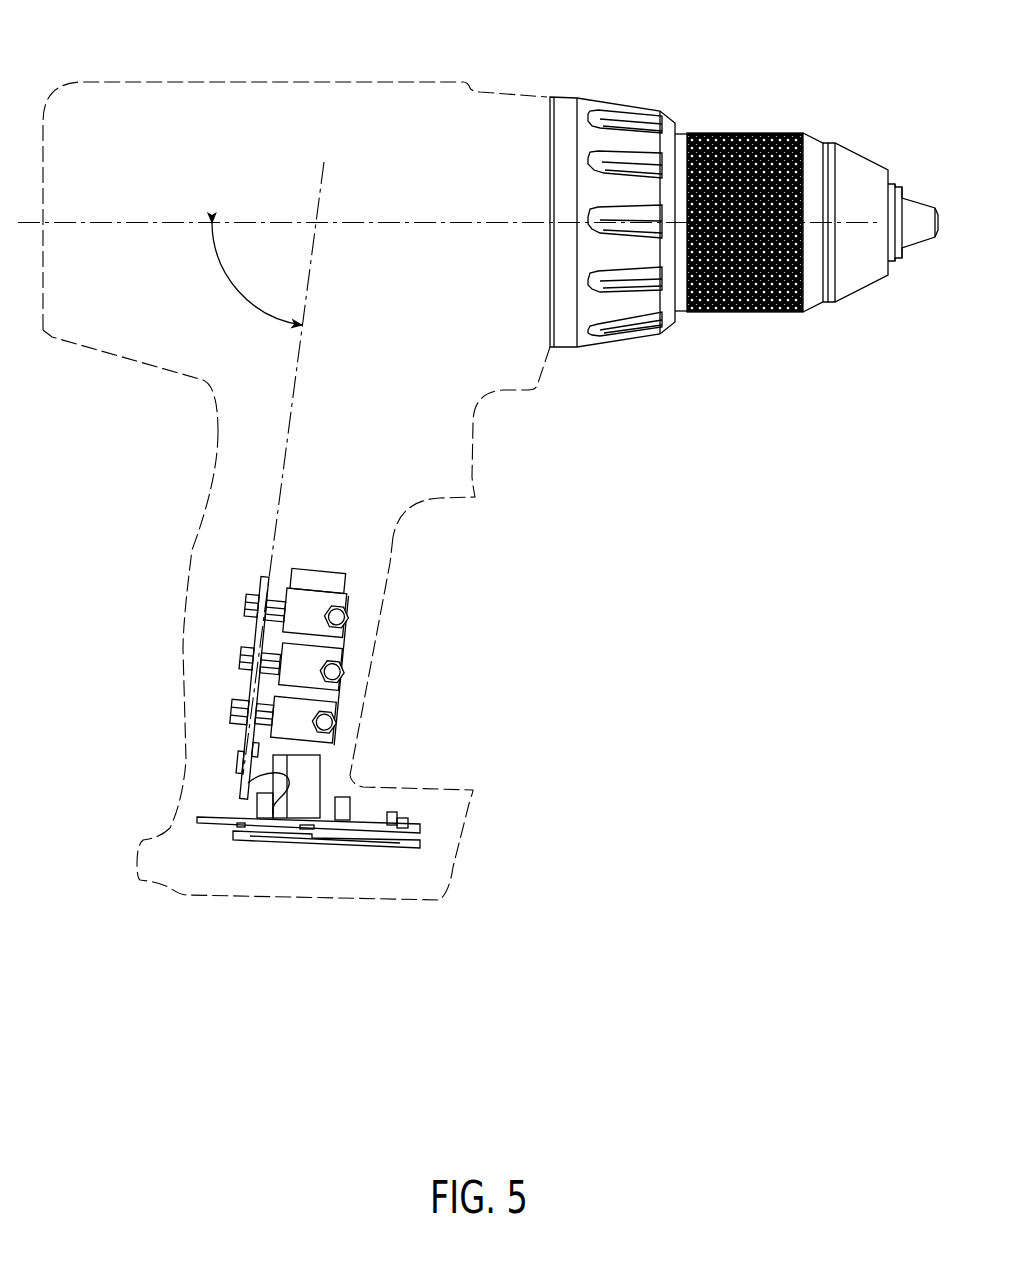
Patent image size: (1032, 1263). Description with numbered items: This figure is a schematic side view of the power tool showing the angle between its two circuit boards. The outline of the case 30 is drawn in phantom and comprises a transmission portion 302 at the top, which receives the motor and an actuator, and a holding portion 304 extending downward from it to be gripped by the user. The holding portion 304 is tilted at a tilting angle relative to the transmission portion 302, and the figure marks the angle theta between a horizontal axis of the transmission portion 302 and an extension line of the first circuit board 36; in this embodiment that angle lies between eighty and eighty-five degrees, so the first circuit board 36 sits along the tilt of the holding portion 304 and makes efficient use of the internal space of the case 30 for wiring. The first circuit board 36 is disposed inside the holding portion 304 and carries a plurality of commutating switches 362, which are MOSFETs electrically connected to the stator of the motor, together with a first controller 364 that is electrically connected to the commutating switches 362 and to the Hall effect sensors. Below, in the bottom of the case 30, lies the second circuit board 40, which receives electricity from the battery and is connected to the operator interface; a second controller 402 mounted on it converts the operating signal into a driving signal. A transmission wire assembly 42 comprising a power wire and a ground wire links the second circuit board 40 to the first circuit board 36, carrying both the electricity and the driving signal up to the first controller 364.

The case 30 is at (163, 372).
The transmission portion 302 is at (308, 82).
The holding portion 304 is at (382, 630).
The first circuit board 36 is at (263, 683).
The commutating switches 362 is at (315, 603).
The first controller 364 is at (258, 762).
The transmission wire assembly 42 is at (242, 783).
The second circuit board 40 is at (417, 825).
The second controller 402 is at (382, 838).